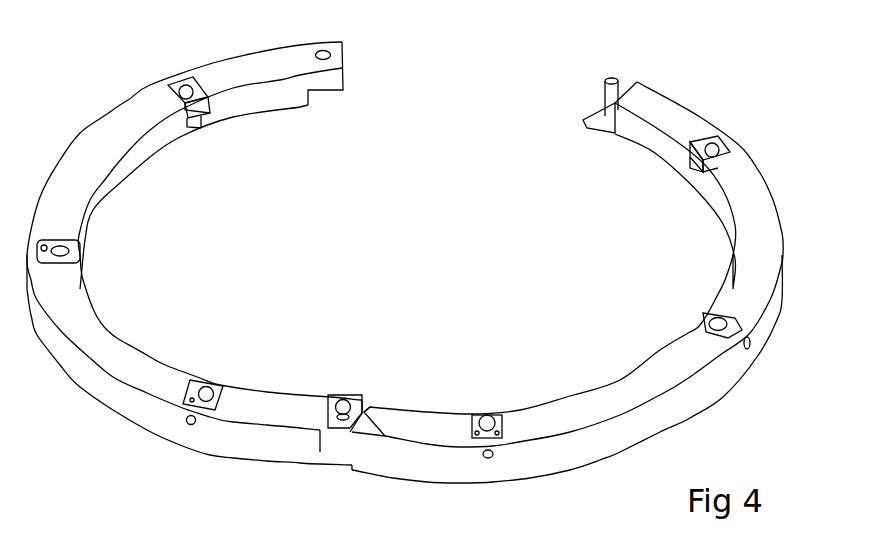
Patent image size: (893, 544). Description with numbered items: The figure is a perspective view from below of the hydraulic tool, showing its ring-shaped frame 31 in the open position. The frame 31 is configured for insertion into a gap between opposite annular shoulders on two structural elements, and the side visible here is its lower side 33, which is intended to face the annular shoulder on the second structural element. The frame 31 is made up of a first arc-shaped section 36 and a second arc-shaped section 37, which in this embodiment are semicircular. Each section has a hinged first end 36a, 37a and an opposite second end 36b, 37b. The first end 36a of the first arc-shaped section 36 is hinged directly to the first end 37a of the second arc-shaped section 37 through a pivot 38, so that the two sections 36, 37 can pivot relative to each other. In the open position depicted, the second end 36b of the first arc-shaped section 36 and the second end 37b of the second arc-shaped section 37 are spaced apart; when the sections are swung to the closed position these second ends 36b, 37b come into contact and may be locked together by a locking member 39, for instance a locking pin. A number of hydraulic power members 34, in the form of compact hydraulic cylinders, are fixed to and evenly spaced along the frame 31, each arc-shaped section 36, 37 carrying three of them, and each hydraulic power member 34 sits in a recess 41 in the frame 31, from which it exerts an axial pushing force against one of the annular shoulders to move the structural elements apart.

The ring-shaped frame 31 is at (420, 480).
The lower side 33 is at (83, 143).
The hydraulic power member 34 is at (210, 113).
The first arc-shaped section 36 is at (663, 370).
The first end of the first arc-shaped section 36a is at (386, 400).
The second end of the first arc-shaped section 36b is at (588, 144).
The second arc-shaped section 37 is at (96, 325).
The first end of the second arc-shaped section 37a is at (322, 387).
The second end of the second arc-shaped section 37b is at (337, 96).
The pivot 38 is at (345, 392).
The locking member 39 is at (606, 96).
The recess 41 is at (197, 125).